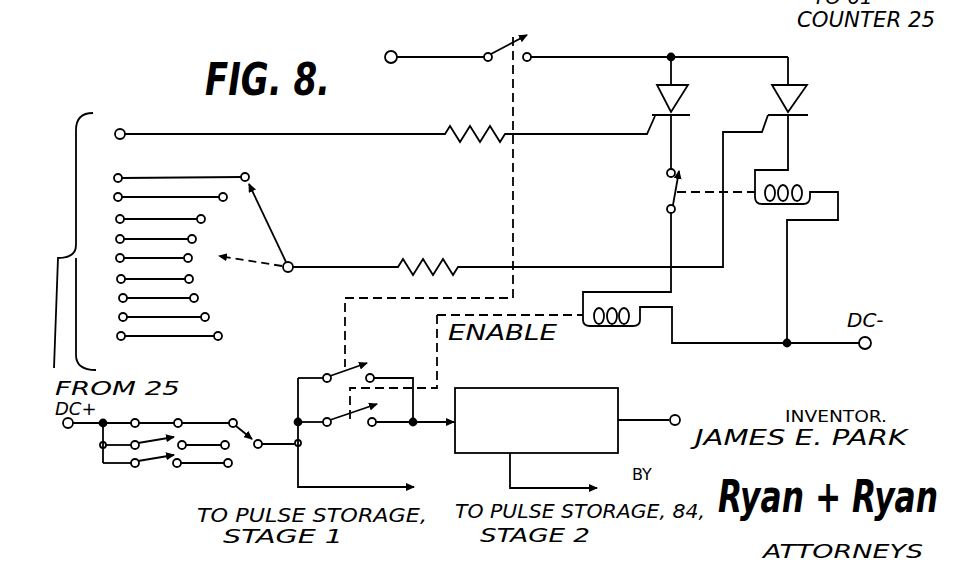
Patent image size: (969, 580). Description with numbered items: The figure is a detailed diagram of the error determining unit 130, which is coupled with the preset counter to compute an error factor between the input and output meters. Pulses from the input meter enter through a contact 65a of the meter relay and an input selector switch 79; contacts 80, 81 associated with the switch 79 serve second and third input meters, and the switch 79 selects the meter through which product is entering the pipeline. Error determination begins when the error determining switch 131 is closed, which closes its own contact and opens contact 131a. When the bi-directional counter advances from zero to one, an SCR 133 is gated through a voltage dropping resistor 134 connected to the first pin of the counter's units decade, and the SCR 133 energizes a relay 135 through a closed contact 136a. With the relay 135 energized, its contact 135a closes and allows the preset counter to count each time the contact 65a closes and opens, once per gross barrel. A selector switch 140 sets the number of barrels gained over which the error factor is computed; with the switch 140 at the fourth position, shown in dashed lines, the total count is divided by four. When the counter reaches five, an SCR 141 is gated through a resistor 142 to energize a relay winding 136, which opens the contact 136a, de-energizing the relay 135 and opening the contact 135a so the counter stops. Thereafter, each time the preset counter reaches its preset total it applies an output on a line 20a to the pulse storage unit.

The error determining unit 130 is at (299, 223).
The selector switch 140 is at (256, 240).
The voltage dropping resistor 134 is at (470, 112).
The resistor 142 is at (447, 245).
The error determining switch 131 is at (508, 45).
The SCR 133 is at (657, 95).
The SCR 141 is at (805, 93).
The relay winding 136 is at (800, 186).
The contact 136a is at (669, 200).
The relay 135 is at (607, 326).
The contact 131a is at (348, 368).
The contact 135a is at (343, 425).
The line 20a is at (526, 487).
The contact 65a is at (169, 423).
The contact 80 is at (156, 446).
The contact 81 is at (166, 459).
The input selector switch 79 is at (251, 433).